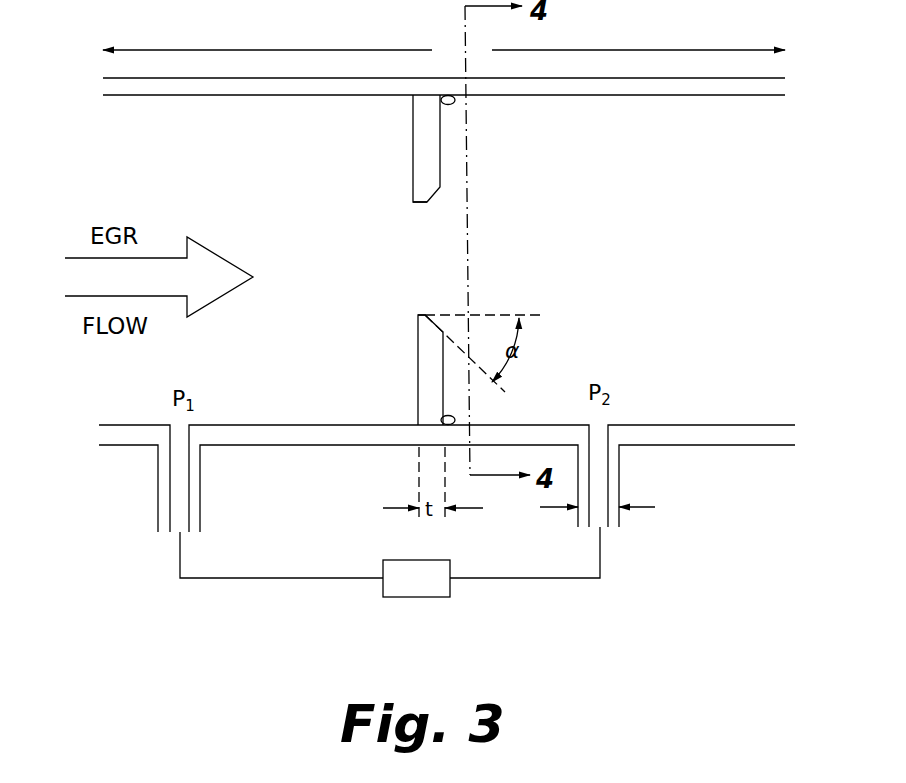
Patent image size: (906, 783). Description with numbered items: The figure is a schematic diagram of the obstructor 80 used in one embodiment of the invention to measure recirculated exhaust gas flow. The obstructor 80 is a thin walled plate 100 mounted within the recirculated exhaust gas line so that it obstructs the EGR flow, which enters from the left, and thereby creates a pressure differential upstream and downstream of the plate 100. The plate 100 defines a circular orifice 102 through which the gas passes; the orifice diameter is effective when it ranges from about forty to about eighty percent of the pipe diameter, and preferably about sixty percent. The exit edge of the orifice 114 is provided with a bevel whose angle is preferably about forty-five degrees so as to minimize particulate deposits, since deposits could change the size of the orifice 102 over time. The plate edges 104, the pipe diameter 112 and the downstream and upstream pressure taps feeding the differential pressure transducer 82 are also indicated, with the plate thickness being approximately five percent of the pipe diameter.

The obstructor 80 is at (372, 163).
The differential pressure transducer 82 is at (405, 597).
The thin walled plate 100 is at (418, 350).
The circular orifice 102 is at (423, 206).
The plate edges 104 is at (412, 208).
The pipe inner diameter 112 is at (730, 97).
The exit edge of the orifice 114 is at (437, 201).